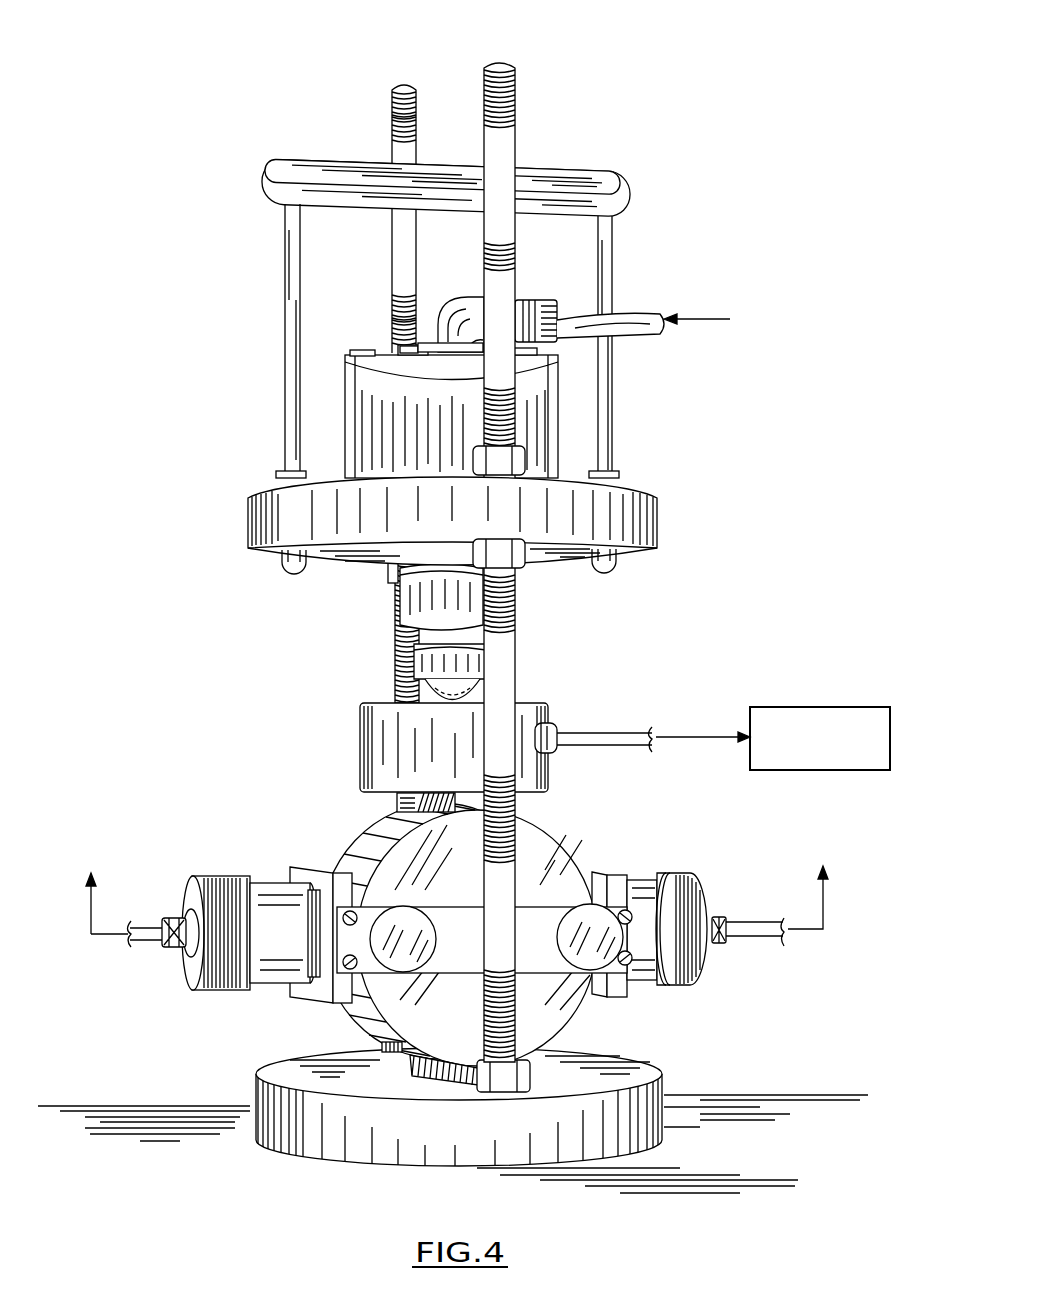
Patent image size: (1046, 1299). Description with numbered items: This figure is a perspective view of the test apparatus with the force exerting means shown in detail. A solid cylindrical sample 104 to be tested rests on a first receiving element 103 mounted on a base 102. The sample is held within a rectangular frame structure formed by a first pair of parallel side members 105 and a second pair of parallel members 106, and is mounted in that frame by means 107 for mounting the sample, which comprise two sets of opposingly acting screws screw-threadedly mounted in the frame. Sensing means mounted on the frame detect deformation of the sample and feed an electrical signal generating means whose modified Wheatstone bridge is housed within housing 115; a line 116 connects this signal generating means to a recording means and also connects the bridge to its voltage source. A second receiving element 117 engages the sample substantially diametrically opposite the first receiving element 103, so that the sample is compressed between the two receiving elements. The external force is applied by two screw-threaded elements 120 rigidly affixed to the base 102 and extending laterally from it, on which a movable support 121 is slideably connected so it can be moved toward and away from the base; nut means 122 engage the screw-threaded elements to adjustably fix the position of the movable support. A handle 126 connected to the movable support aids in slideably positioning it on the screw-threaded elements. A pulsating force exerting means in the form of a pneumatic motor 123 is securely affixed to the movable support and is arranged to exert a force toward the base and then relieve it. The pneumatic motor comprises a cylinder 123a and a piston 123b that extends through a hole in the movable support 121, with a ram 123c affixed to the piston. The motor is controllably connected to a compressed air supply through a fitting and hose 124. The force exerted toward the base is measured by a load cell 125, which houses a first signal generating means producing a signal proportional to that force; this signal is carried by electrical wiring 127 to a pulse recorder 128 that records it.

The base 102 is at (278, 1066).
The first receiving element 103 is at (470, 1075).
The solid cylindrical sample 104 is at (553, 831).
The first pair of parallel side members 105 is at (548, 963).
The second pair of parallel members 106 is at (307, 862).
The means for mounting the sample 107 is at (421, 924).
The housing 115 is at (680, 875).
The line 116 is at (757, 940).
The second receiving element 117 is at (474, 802).
The screw-threaded elements 120 is at (479, 92).
The movable support 121 is at (657, 515).
The nut means 122 is at (518, 458).
The pneumatic motor 123 is at (384, 593).
The cylinder 123a is at (345, 410).
The piston 123b is at (450, 548).
The ram 123c is at (414, 638).
The fitting and hose 124 is at (540, 303).
The load cell 125 is at (360, 750).
The handle 126 is at (568, 172).
The electrical wiring 127 is at (622, 730).
The pulse recorder 128 is at (815, 707).